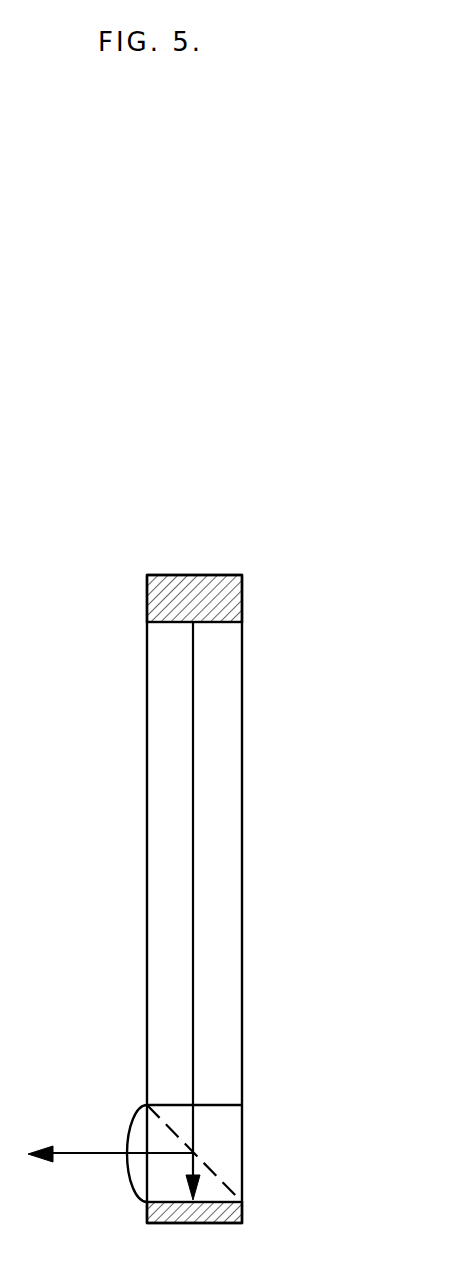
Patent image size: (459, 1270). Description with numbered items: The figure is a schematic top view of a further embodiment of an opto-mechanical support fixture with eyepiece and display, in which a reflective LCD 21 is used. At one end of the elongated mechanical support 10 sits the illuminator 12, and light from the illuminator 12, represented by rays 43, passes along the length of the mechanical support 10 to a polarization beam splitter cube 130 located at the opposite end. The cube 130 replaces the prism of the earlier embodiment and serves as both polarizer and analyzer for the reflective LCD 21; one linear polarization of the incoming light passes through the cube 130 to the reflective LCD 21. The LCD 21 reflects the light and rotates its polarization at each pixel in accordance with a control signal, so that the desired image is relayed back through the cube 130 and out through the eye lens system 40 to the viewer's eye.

The mechanical support 10 is at (242, 852).
The illuminator 12 is at (217, 595).
The rays 43 is at (190, 920).
The polarization beam splitter cube 130 is at (217, 1128).
The eye lens system 40 is at (122, 1173).
The reflective LCD 21 is at (243, 1205).